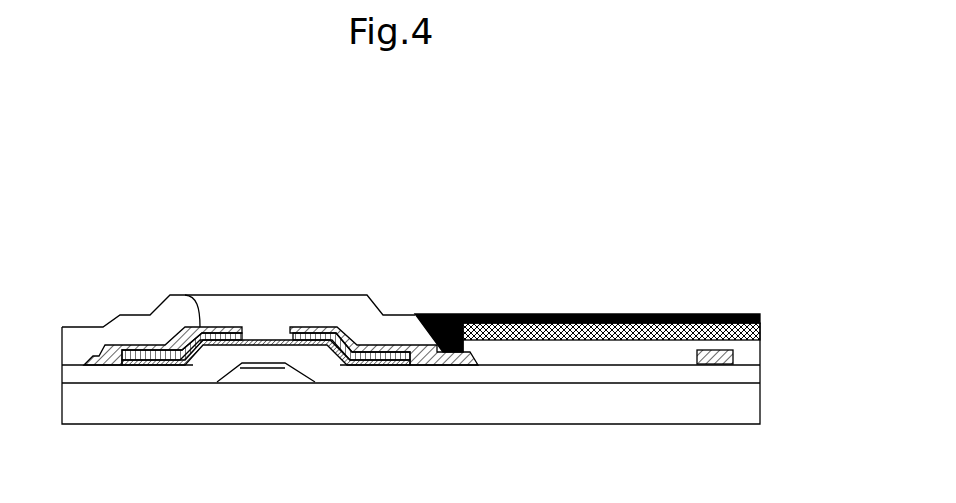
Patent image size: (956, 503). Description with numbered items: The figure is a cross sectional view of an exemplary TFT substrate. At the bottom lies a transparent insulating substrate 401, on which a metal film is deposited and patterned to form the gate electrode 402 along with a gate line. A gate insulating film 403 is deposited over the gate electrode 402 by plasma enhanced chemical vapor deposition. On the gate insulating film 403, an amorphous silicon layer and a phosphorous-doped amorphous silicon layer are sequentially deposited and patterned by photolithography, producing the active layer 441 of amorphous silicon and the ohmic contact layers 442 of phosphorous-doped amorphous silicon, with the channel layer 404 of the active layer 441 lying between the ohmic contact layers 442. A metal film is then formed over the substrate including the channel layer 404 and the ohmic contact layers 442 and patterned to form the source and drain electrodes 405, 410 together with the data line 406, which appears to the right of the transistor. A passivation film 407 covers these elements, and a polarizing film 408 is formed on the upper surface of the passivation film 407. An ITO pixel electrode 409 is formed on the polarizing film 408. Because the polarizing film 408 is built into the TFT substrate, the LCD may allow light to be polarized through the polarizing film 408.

The transparent insulating substrate 401 is at (757, 410).
The gate electrode 402 is at (268, 372).
The gate insulating film 403 is at (757, 373).
The channel layer 404 is at (266, 255).
The source electrode 405 is at (170, 293).
The data line 406 is at (703, 348).
The passivation film 407 is at (527, 352).
The polarizing film 408 is at (598, 314).
The ITO pixel electrode 409 is at (655, 314).
The drain electrode 410 is at (308, 326).
The active layer 441 is at (267, 340).
The ohmic contact layers 442 is at (223, 338).